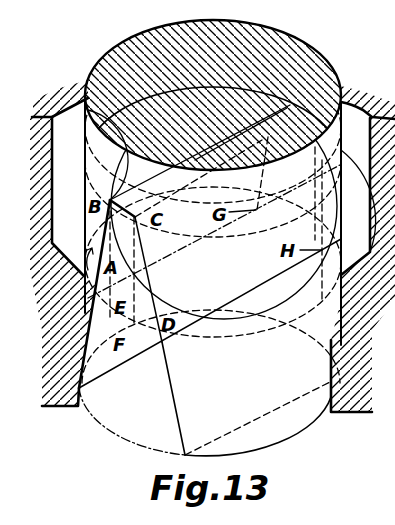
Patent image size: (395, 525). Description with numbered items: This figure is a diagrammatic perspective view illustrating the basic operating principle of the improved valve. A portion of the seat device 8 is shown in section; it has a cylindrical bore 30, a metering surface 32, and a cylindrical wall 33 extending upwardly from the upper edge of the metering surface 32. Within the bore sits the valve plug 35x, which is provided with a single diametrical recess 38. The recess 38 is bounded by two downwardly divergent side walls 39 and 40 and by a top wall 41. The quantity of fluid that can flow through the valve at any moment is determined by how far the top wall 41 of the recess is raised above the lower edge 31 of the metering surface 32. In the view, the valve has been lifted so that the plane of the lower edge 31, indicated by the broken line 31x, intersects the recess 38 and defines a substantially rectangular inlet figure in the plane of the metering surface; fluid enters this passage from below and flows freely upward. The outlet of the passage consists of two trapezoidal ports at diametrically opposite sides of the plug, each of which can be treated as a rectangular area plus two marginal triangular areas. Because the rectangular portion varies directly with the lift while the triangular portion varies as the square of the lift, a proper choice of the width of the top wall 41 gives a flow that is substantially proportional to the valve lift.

The cylindrical wall 33 is at (57, 150).
The metering surface 32 is at (78, 250).
The broken line 31x is at (70, 294).
The lower edge 31 is at (340, 275).
The cylindrical bore 30 is at (86, 328).
The side wall 39 is at (72, 362).
The diametrical recess 38 is at (104, 415).
The valve plug 35x is at (100, 115).
The top wall 41 is at (127, 165).
The side wall 40 is at (162, 389).
The seat device 8 is at (337, 409).